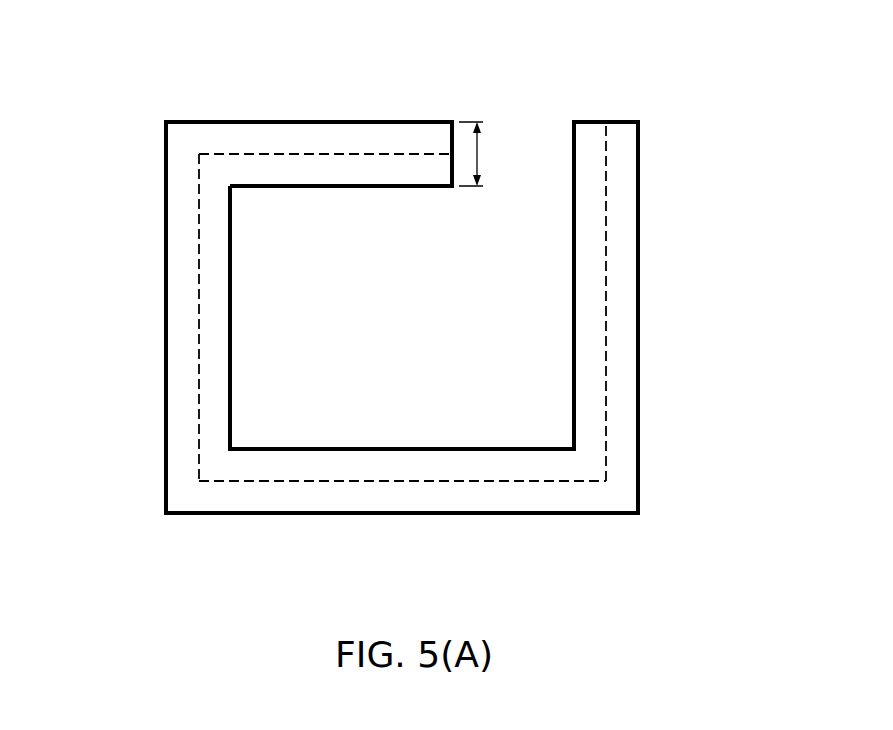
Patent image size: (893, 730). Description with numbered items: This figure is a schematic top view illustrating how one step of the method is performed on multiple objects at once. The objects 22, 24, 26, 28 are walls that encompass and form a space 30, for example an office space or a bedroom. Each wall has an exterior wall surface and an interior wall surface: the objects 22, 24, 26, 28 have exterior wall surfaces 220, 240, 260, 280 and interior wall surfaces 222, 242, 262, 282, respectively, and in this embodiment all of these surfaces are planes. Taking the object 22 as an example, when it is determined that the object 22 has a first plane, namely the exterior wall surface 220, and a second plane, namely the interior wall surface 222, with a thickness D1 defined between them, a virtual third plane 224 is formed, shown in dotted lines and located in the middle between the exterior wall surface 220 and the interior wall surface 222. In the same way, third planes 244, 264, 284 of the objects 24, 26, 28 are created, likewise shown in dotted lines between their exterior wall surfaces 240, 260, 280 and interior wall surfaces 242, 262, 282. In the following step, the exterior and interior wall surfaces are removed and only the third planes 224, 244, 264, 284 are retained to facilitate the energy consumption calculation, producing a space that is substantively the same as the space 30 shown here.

The object 22 is at (309, 124).
The exterior wall surface 220 is at (397, 122).
The interior wall surface 222 is at (340, 186).
The third plane 224 is at (270, 154).
The object 24 is at (187, 317).
The exterior wall surface 240 is at (166, 302).
The interior wall surface 242 is at (232, 317).
The third plane 244 is at (199, 328).
The object 26 is at (402, 493).
The exterior wall surface 260 is at (457, 513).
The interior wall surface 262 is at (368, 448).
The third plane 264 is at (530, 481).
The object 28 is at (611, 317).
The exterior wall surface 280 is at (638, 342).
The interior wall surface 282 is at (573, 300).
The third plane 284 is at (606, 370).
The space 30 is at (415, 328).
The thickness D1 is at (486, 154).